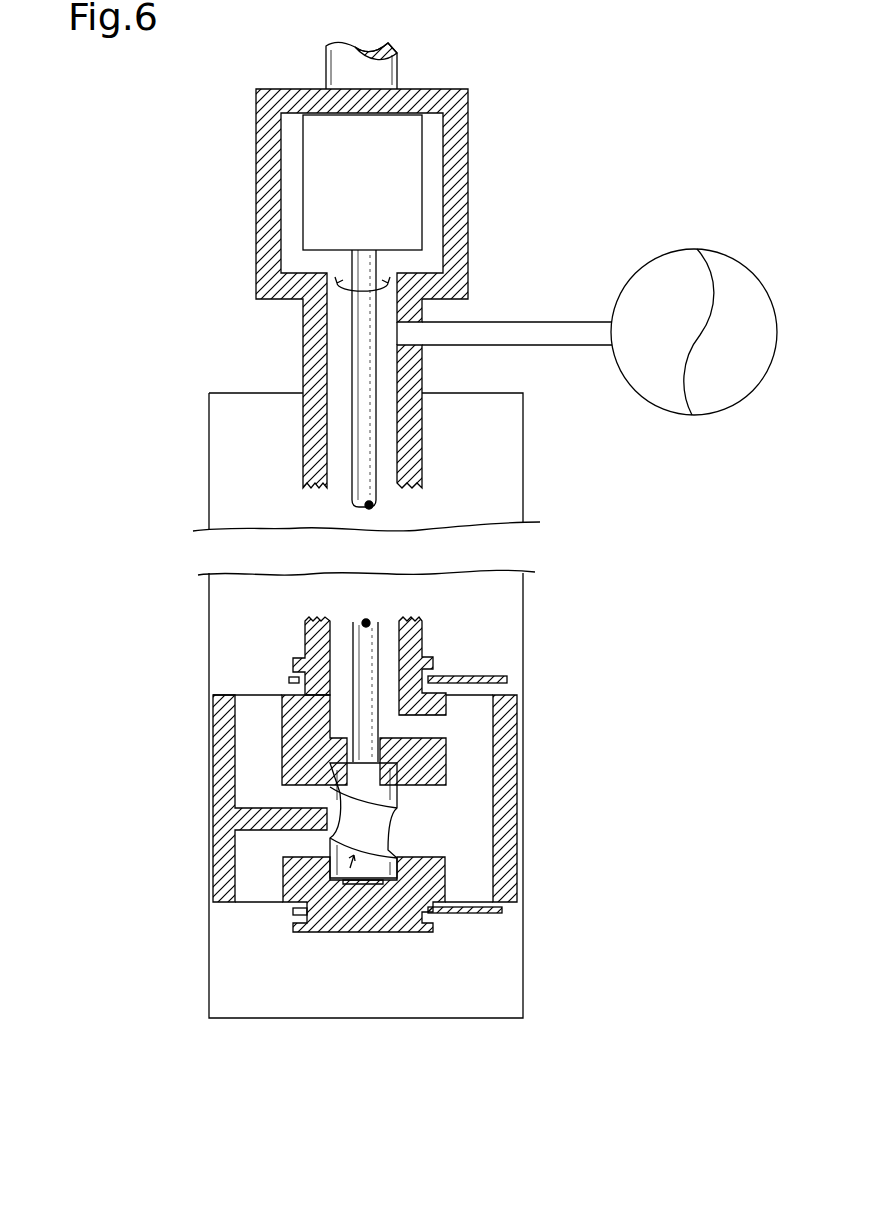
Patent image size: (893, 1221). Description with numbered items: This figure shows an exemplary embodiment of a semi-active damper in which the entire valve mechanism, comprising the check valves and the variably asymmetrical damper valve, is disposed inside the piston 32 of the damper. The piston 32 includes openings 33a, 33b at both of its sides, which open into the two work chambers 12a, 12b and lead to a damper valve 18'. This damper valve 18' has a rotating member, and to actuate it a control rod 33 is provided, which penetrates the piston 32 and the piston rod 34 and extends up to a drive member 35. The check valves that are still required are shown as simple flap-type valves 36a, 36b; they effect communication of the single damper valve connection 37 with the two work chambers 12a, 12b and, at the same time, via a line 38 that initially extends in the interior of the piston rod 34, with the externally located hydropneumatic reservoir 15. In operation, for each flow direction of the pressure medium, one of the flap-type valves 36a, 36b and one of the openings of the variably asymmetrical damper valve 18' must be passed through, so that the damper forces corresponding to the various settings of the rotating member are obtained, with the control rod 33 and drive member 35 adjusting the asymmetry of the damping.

The work chamber 12a is at (223, 615).
The work chamber 12b is at (220, 950).
The hydropneumatic reservoir 15 is at (657, 275).
The damper valve 18' is at (352, 920).
The piston 32 is at (219, 809).
The control rod 33 is at (358, 345).
The opening 33a is at (243, 724).
The opening 33b is at (241, 869).
The piston rod 34 is at (308, 442).
The drive member 35 is at (308, 192).
The flap-type valve 36a is at (497, 680).
The flap-type valve 36b is at (473, 912).
The damper valve connection 37 is at (427, 842).
The line 38 is at (423, 637).